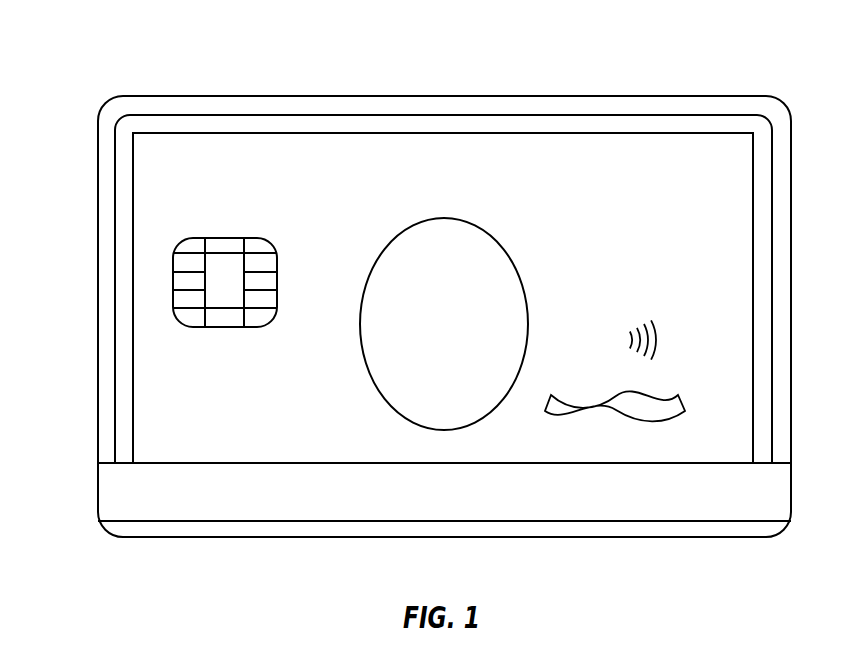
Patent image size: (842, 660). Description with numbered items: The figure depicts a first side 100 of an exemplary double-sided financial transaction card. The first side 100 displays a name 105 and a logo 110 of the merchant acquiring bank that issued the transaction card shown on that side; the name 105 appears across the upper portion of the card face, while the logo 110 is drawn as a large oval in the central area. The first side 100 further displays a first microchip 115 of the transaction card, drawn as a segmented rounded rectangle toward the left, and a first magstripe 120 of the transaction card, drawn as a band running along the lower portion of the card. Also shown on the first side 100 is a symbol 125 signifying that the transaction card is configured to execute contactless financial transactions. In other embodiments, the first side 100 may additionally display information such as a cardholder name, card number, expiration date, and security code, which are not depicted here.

The first side 100 is at (717, 43).
The name 105 is at (289, 168).
The logo 110 is at (513, 265).
The first microchip 115 is at (173, 278).
The first magstripe 120 is at (161, 500).
The symbol 125 is at (642, 320).